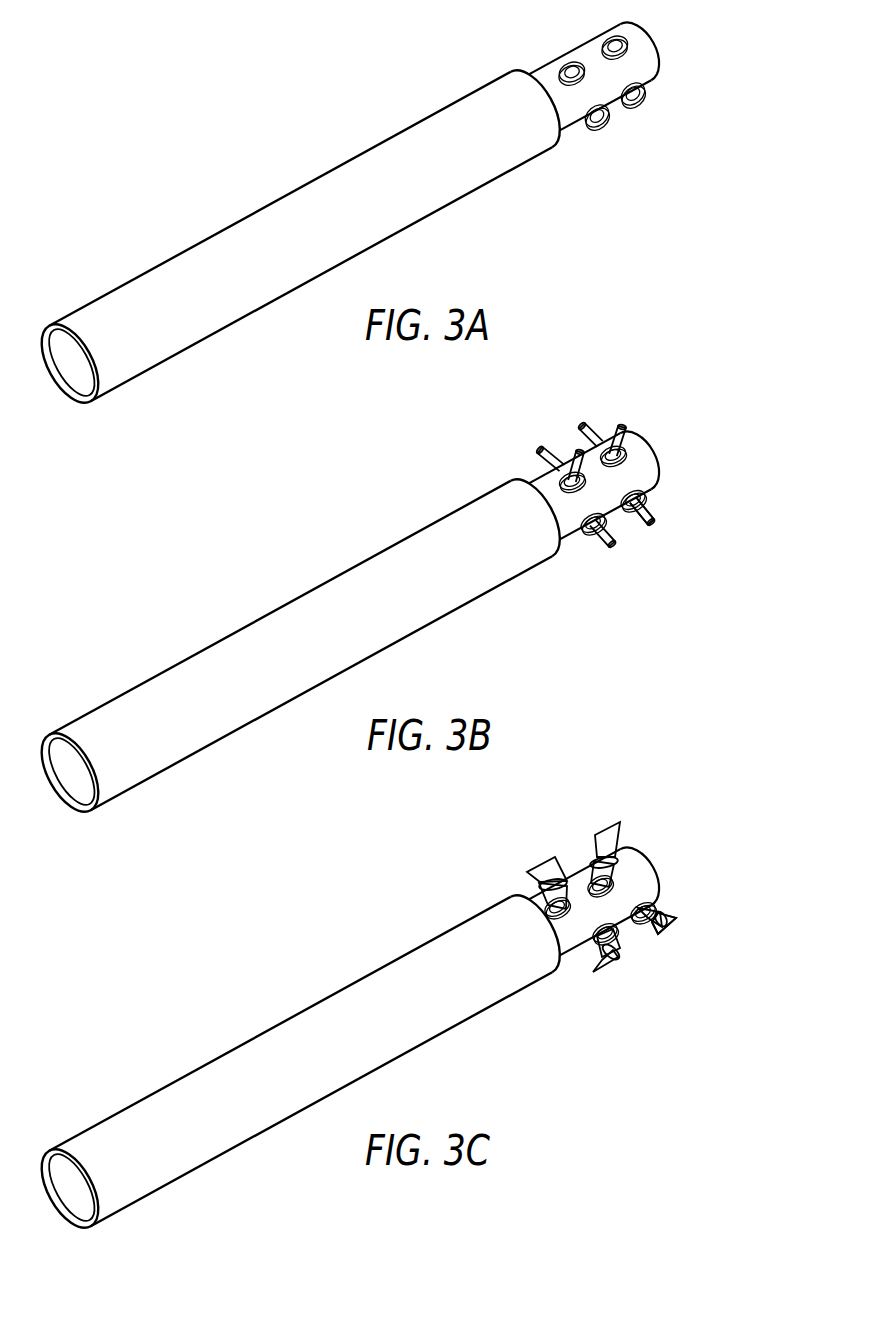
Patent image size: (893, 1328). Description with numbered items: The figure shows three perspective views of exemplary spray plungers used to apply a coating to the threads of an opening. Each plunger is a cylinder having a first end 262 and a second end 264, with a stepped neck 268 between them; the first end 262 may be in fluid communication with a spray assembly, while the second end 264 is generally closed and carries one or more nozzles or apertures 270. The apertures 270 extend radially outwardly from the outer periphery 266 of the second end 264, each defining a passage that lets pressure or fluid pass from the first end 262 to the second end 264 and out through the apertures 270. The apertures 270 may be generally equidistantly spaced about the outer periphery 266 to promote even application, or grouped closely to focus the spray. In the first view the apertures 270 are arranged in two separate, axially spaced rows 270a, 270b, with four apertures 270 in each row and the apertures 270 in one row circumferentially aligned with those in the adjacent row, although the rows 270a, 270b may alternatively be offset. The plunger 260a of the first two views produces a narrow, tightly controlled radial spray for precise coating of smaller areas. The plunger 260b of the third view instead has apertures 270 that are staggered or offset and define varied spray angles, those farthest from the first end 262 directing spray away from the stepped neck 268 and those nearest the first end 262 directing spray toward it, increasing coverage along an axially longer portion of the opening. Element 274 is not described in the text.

In FIG. 3A, the plunger 260a is at (205, 193).
In FIG. 3B, the plunger 260a is at (300, 645).
In FIG. 3C, the plunger 260b is at (300, 1061).
In FIG. 3A, the first end 262 is at (93, 410).
In FIG. 3B, the first end 262 is at (70, 811).
In FIG. 3C, the first end 262 is at (70, 1229).
In FIG. 3A, the second end 264 is at (577, 140).
In FIG. 3B, the second end 264 is at (548, 552).
In FIG. 3C, the second end 264 is at (548, 970).
In FIG. 3A, the outer periphery 266 is at (617, 100).
In FIG. 3B, the outer periphery 266 is at (680, 475).
In FIG. 3C, the outer periphery 266 is at (648, 850).
In FIG. 3A, the stepped neck 268 is at (529, 74).
In FIG. 3B, the stepped neck 268 is at (569, 481).
In FIG. 3C, the stepped neck 268 is at (567, 893).
In FIG. 3A, the apertures 270 is at (582, 60).
In FIG. 3B, the apertures 270 is at (601, 435).
In FIG. 3C, the apertures 270 is at (572, 900).
In FIG. 3A, the row 270a is at (604, 31).
In FIG. 3A, the row 270b is at (562, 55).
In FIG. 3B, the protrusion shaft / blade 274 is at (623, 510).
In FIG. 3C, the protrusion shaft / blade 274 is at (633, 923).